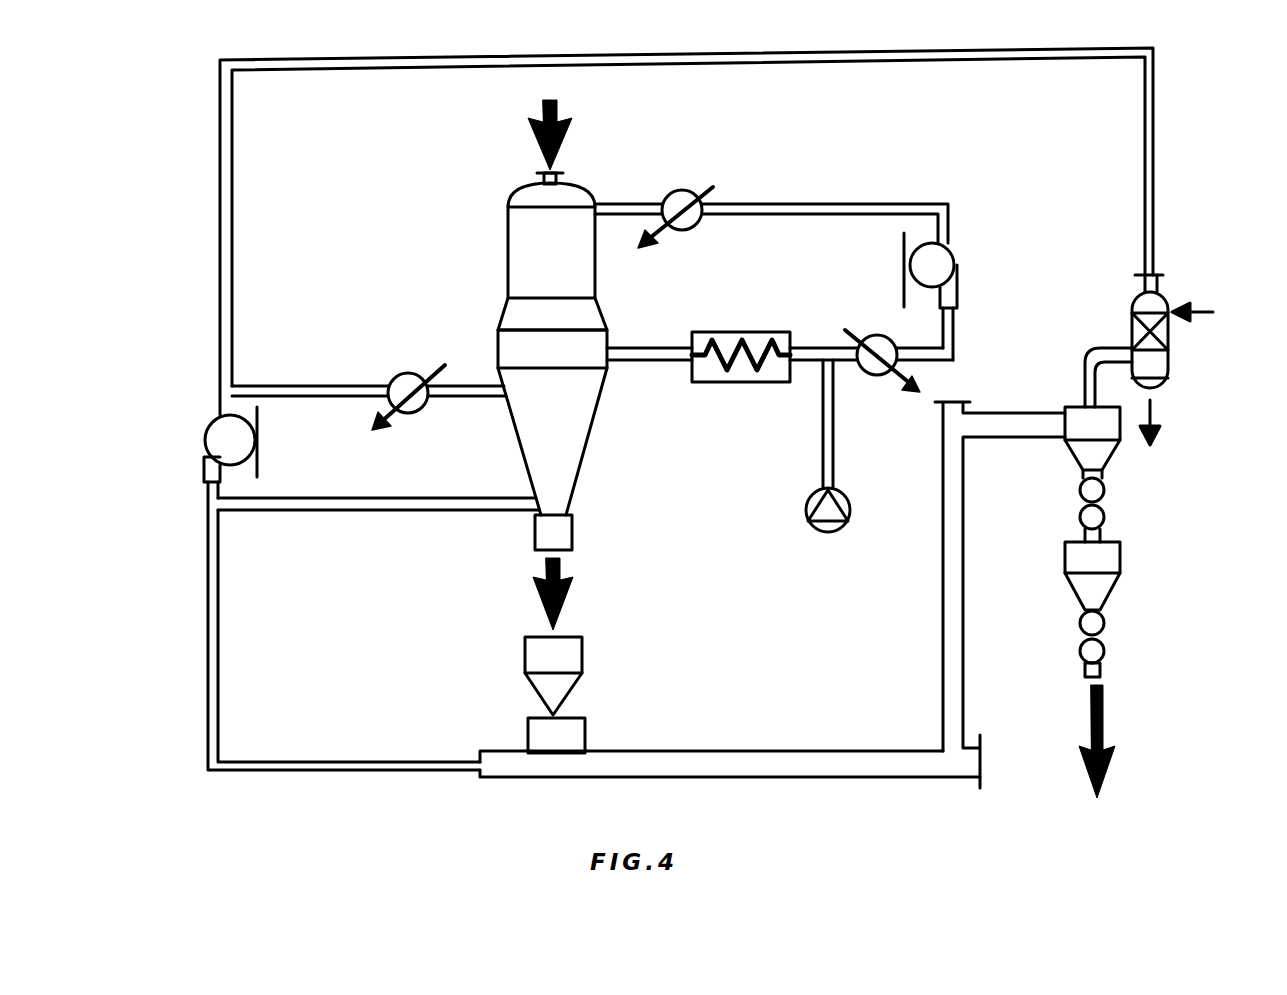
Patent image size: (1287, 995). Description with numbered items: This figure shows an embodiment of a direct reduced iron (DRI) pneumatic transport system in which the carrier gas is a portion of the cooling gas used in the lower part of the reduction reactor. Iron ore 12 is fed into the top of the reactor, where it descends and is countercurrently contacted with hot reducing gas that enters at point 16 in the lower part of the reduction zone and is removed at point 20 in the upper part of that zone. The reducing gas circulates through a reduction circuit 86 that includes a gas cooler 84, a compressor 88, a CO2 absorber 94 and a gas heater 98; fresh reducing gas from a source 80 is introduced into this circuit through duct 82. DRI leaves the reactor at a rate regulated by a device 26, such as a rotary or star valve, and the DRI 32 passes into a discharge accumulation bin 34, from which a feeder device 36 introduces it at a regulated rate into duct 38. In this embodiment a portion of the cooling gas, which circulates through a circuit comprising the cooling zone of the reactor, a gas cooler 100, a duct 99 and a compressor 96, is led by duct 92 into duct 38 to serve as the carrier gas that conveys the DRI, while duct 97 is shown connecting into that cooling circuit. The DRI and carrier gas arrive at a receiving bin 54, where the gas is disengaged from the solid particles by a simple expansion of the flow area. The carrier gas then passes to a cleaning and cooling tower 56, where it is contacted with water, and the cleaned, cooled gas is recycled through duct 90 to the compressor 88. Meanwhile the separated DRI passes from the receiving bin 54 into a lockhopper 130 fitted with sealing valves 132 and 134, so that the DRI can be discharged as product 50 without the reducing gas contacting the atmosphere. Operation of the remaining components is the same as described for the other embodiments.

The iron ore 12 is at (540, 137).
The reducing gas inlet point 16 is at (635, 345).
The reducing gas removal point 20 is at (628, 200).
The DRI discharge regulating device 26 is at (573, 530).
The DRI 32 is at (563, 610).
The discharge accumulation bin 34 is at (565, 658).
The feeder device 36 is at (587, 722).
The duct 38 is at (633, 753).
The product output 50 is at (1112, 757).
The receiving bin 54 is at (1083, 422).
The cleaning and cooling tower 56 is at (1168, 355).
The reducing gas source 80 is at (848, 498).
The duct 82 is at (822, 452).
The gas cooler 84 is at (672, 192).
The reduction circuit 86 is at (784, 198).
The compressor 88 is at (955, 255).
The duct 90 is at (1157, 188).
The duct 92 is at (335, 762).
The CO2 absorber 94 is at (875, 330).
The compressor 96 is at (213, 425).
The inlet line 97 is at (487, 495).
The gas heater 98 is at (735, 327).
The duct 99 is at (350, 385).
The gas cooler 100 is at (412, 373).
The lockhopper 130 is at (1073, 560).
The sealing valve 132 is at (1083, 507).
The sealing valve 134 is at (1080, 642).